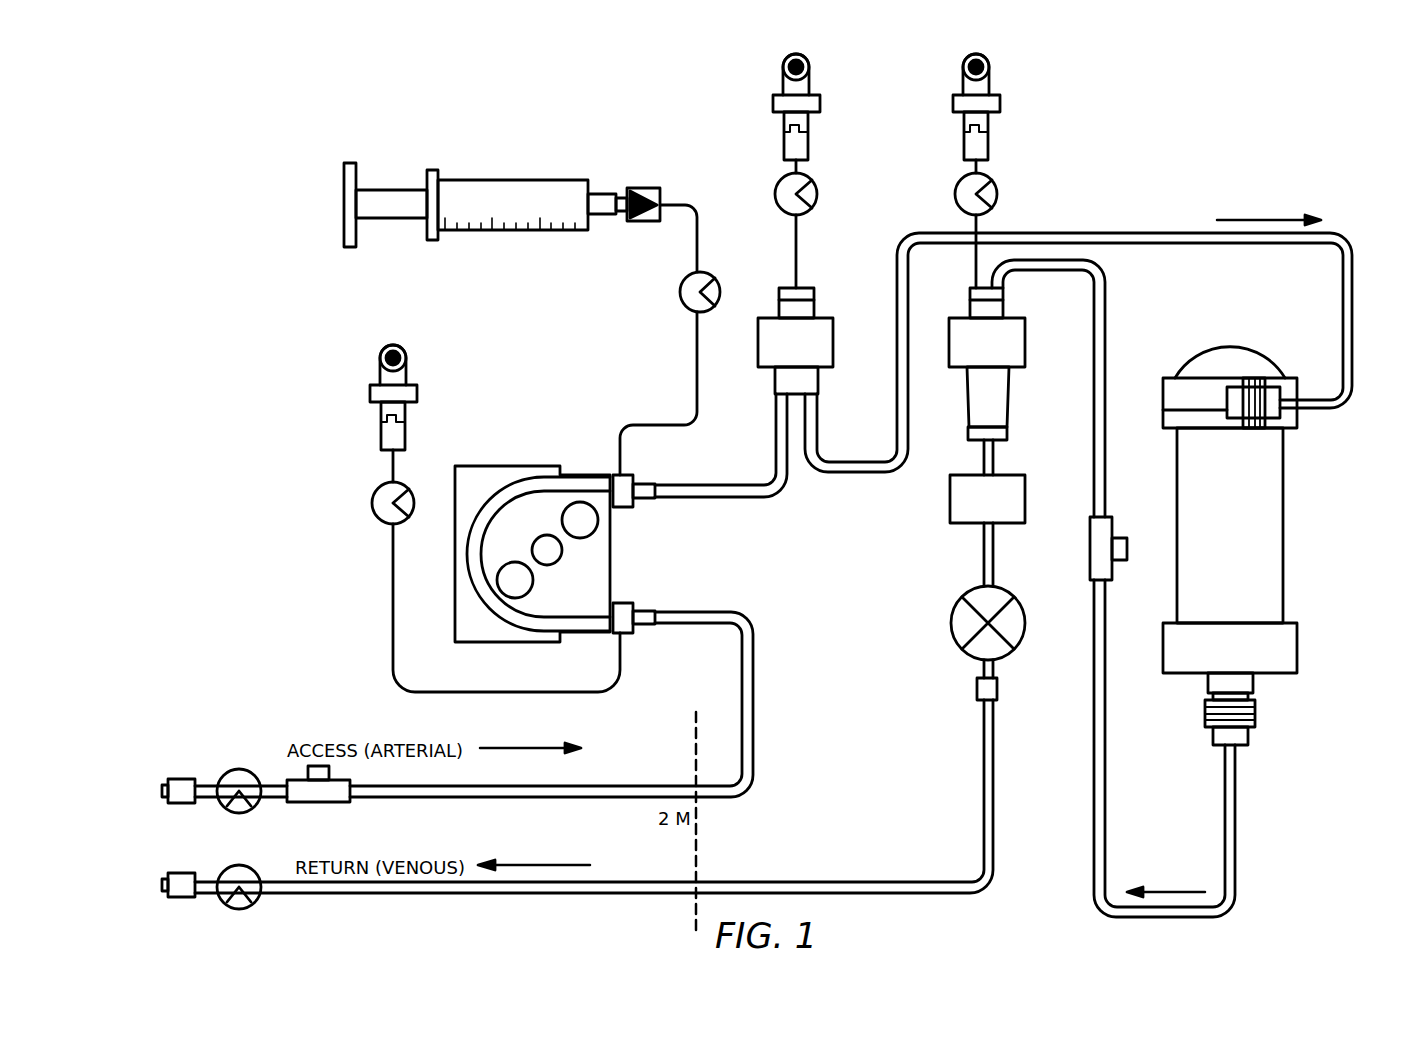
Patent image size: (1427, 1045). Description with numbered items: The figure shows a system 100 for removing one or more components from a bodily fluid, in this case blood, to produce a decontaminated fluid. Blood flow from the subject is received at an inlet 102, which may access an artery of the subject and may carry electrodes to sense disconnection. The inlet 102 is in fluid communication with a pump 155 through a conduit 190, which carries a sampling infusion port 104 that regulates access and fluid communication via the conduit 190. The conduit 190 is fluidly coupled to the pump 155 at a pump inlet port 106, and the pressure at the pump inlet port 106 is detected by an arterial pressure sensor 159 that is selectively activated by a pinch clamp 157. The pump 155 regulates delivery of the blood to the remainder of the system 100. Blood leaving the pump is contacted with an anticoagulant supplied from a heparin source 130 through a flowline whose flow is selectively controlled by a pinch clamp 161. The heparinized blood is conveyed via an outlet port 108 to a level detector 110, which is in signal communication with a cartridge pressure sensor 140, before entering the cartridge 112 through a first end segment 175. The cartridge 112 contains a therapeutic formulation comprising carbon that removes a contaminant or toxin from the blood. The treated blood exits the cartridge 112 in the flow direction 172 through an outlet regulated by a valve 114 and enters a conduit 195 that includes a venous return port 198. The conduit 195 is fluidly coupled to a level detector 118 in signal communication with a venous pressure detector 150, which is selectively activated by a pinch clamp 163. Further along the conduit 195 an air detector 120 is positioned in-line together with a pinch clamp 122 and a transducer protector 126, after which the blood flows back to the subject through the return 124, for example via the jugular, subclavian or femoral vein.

The system 100 is at (1348, 124).
The inlet 102 is at (170, 779).
The sampling infusion port 104 is at (320, 803).
The pump inlet port 106 is at (628, 633).
The outlet port 108 is at (628, 507).
The level detector 110 is at (814, 311).
The cartridge 112 is at (1283, 478).
The valve 114 is at (1255, 713).
The level detector 118 is at (1008, 385).
The air detector 120 is at (949, 496).
The pinch clamp 122 is at (949, 618).
The return 124 is at (170, 872).
The transducer protector 126 is at (977, 686).
The heparin source 130 is at (516, 180).
The cartridge pressure sensor 140 is at (820, 104).
The venous pressure detector 150 is at (1000, 104).
The pump 155 is at (493, 466).
The pinch clamp 157 is at (372, 499).
The arterial pressure sensor 159 is at (370, 390).
The pinch clamp 161 is at (678, 291).
The pinch clamp 163 is at (997, 194).
The flow direction 172 is at (1183, 890).
The first end segment 175 is at (1258, 385).
The conduit 190 is at (745, 795).
The conduit 195 is at (872, 893).
The venous return port 198 is at (1086, 549).